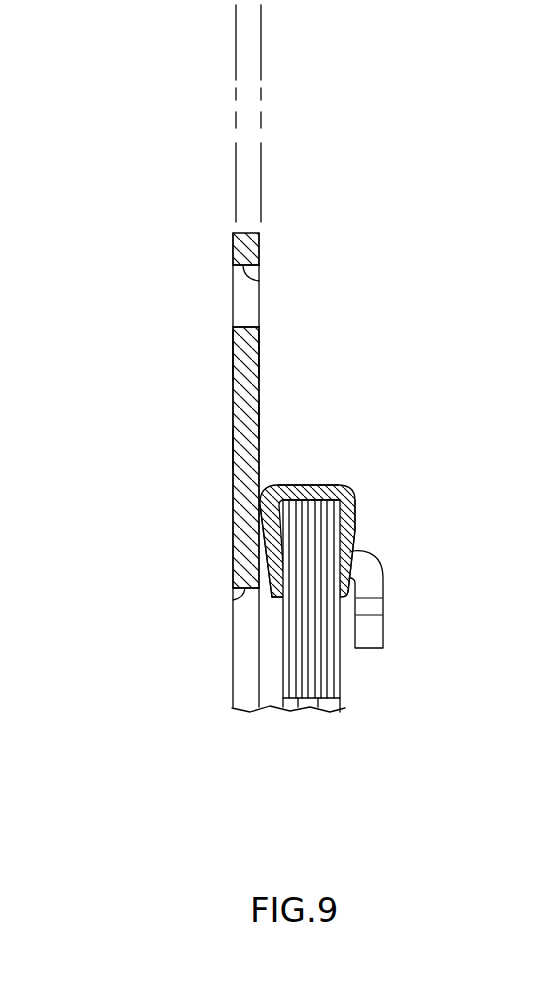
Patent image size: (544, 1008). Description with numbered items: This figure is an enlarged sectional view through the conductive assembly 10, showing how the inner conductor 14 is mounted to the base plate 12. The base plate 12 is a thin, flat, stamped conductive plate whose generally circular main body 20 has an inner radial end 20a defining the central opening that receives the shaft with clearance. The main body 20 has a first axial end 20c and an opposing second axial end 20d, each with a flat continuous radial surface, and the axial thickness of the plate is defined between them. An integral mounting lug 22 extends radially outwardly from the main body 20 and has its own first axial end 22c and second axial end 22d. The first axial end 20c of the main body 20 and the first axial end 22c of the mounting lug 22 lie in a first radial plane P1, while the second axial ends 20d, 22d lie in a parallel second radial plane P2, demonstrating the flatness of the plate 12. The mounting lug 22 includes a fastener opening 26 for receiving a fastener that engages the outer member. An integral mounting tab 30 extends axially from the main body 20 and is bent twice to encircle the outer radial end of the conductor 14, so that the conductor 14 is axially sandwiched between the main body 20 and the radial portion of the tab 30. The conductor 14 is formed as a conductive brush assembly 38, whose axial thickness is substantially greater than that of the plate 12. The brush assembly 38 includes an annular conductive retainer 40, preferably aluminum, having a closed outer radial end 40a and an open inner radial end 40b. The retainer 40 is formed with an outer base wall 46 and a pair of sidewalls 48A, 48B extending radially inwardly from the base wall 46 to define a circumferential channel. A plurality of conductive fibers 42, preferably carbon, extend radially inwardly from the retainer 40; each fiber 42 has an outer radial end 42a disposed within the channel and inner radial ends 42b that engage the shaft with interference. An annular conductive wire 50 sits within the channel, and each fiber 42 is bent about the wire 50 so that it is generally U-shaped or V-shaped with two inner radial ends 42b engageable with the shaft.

The first radial plane P1 is at (262, 40).
The second radial plane P2 is at (236, 17).
The conductive assembly 10 is at (448, 343).
The base plate 12 is at (118, 412).
The inner conductor 14 is at (423, 532).
The main body 20 is at (190, 478).
The inner radial end 20a is at (232, 600).
The first axial end 20c is at (259, 432).
The second axial end 20d is at (233, 448).
The mounting lug 22 is at (293, 315).
The first axial end 22c is at (259, 355).
The second axial end 22d is at (233, 347).
The fastener opening 26 is at (260, 282).
The mounting tab 30 is at (401, 595).
The conductive brush assembly 38 is at (383, 506).
The annular conductive retainer 40 is at (344, 470).
The closed outer radial end 40a is at (308, 476).
The open inner radial end 40b is at (290, 590).
The conductive fibers 42 is at (276, 643).
The outer radial end 42a is at (281, 500).
The inner radial ends 42b is at (283, 692).
The outer base wall 46 is at (312, 500).
The first sidewall 48A is at (268, 544).
The second sidewall 48B is at (350, 535).
The annular conductive wire 50 is at (303, 527).